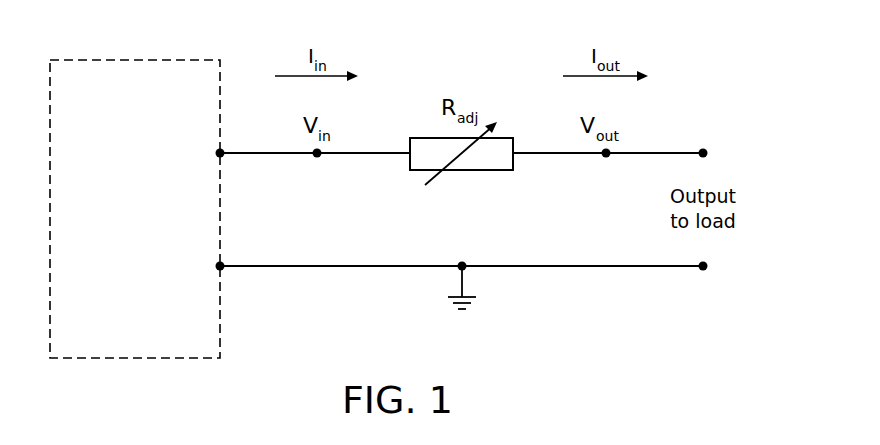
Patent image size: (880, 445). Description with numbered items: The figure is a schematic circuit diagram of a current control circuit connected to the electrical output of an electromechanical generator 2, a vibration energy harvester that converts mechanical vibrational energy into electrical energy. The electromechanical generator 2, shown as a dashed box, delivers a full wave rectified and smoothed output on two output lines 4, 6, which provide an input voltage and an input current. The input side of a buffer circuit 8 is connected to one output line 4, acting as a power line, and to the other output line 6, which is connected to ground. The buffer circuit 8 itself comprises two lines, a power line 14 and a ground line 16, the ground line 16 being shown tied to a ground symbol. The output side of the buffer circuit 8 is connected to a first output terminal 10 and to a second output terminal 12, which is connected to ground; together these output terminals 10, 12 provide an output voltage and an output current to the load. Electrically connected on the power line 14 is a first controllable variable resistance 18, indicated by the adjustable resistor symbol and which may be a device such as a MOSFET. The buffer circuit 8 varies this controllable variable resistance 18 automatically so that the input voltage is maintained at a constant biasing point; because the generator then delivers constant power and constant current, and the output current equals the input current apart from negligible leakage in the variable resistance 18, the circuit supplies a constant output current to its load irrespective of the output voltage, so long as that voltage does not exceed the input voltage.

The electromechanical generator 2 is at (192, 58).
The output line 4 is at (253, 151).
The output line 6 is at (255, 268).
The buffer circuit 8 is at (396, 316).
The first output terminal 10 is at (702, 149).
The second output terminal 12 is at (703, 270).
The power line 14 is at (383, 151).
The ground line 16 is at (424, 265).
The first controllable variable resistance 18 is at (492, 172).